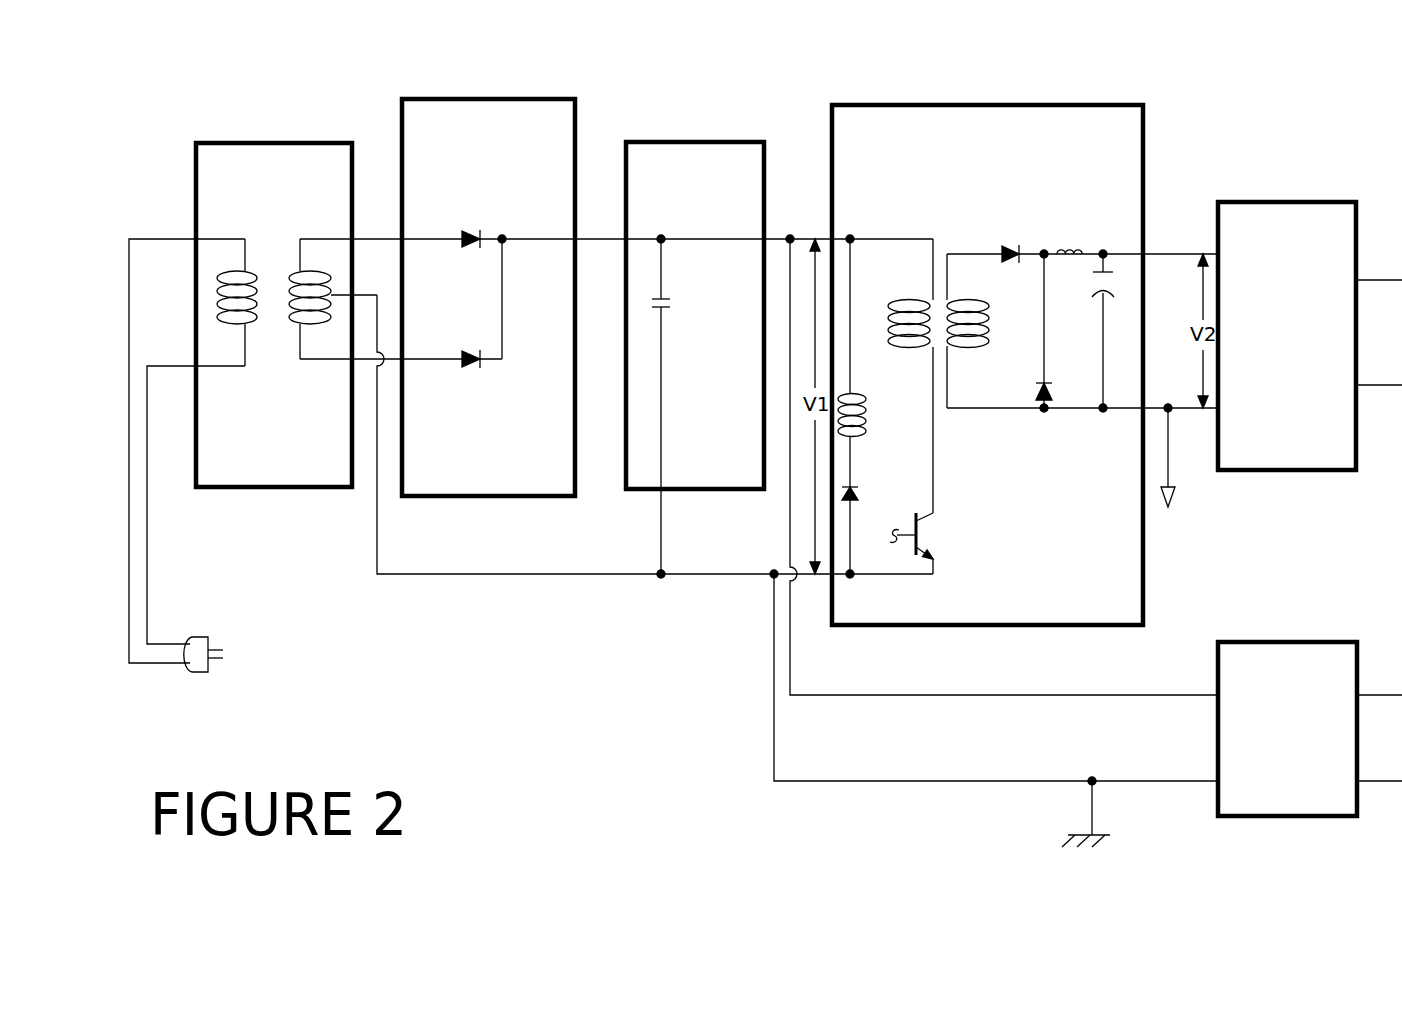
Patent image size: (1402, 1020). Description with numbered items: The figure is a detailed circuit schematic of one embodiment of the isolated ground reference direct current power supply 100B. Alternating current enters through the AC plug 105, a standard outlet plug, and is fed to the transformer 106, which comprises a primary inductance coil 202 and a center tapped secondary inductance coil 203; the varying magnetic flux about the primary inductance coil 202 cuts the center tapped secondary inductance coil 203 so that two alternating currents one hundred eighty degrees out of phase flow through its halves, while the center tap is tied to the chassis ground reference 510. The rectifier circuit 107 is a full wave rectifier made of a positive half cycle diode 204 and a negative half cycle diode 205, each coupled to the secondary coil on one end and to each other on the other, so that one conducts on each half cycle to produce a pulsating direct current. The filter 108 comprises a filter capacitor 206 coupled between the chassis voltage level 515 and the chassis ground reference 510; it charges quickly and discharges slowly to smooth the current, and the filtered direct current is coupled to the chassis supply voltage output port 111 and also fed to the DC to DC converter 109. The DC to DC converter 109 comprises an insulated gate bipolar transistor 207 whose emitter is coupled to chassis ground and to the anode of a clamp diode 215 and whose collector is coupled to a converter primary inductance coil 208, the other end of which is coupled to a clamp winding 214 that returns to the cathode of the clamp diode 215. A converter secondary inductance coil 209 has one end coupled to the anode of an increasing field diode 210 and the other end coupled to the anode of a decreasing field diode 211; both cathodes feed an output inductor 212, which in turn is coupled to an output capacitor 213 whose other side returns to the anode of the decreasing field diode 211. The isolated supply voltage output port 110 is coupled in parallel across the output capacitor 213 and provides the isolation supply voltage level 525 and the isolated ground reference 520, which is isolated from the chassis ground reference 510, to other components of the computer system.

The isolated ground reference direct current power supply 100B is at (187, 71).
The AC plug 105 is at (199, 634).
The transformer 106 is at (269, 140).
The rectifier circuit 107 is at (473, 96).
The filter 108 is at (699, 139).
The DC to DC converter 109 is at (912, 102).
The isolated supply voltage output port 110 is at (1292, 198).
The chassis supply voltage output port 111 is at (1288, 639).
The primary inductance coil 202 is at (258, 254).
The center tapped secondary inductance coil 203 is at (287, 340).
The positive half cycle diode 204 is at (471, 226).
The negative half cycle diode 205 is at (472, 372).
The filter capacitor 206 is at (681, 301).
The insulated gate bipolar transistor 207 is at (936, 534).
The converter primary inductance coil 208 is at (877, 325).
The converter secondary inductance coil 209 is at (999, 327).
The increasing field diode 210 is at (1015, 246).
The decreasing field diode 211 is at (1055, 392).
The output inductor 212 is at (1068, 238).
The output capacitor 213 is at (1092, 280).
The clamp winding 214 is at (880, 414).
The clamp diode 215 is at (912, 533).
The chassis ground reference 510 is at (478, 580).
The chassis voltage level 515 is at (857, 233).
The isolated ground reference 520 is at (1382, 390).
The isolation supply voltage level 525 is at (1133, 249).